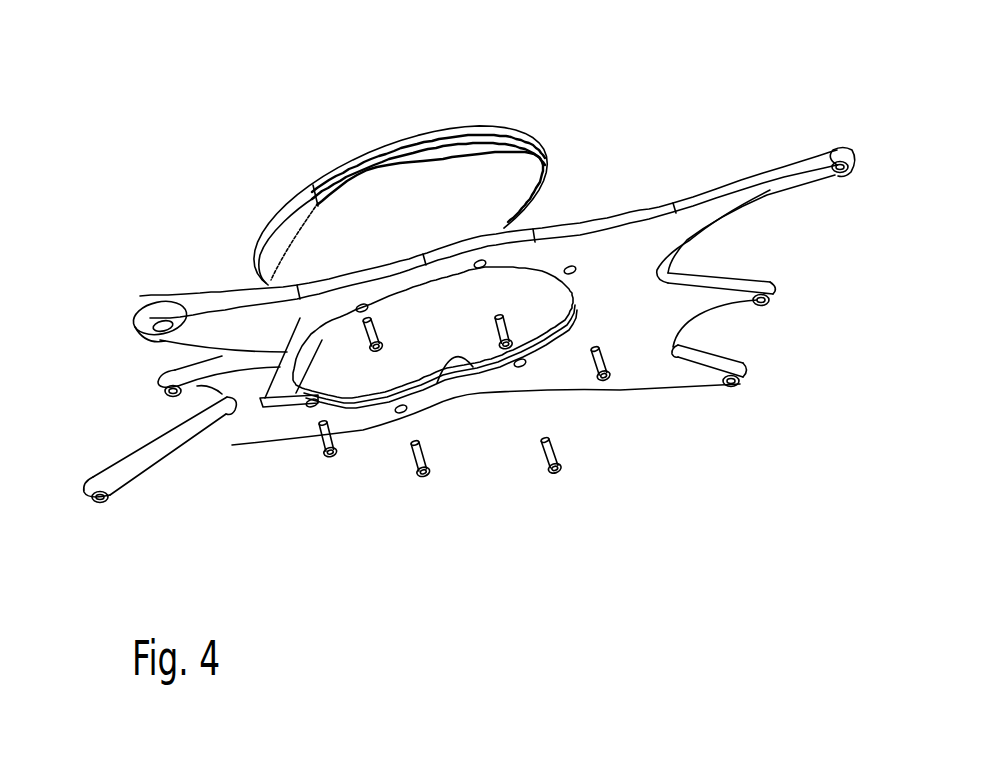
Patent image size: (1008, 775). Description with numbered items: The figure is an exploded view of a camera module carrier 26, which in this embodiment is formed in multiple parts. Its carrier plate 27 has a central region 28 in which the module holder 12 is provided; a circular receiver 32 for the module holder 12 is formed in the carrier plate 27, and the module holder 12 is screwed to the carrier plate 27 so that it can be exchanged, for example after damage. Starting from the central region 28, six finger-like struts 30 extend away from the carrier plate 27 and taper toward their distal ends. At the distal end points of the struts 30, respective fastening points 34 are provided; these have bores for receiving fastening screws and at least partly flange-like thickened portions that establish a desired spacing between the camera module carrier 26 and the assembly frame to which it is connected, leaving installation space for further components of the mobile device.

The module holder 12 is at (411, 196).
The camera module carrier 26 is at (679, 140).
The carrier plate 27 is at (613, 257).
The central region 28 is at (381, 444).
The finger-like struts 30 is at (197, 333).
The circular receiver 32 is at (472, 360).
The fastening points 34 is at (197, 333).